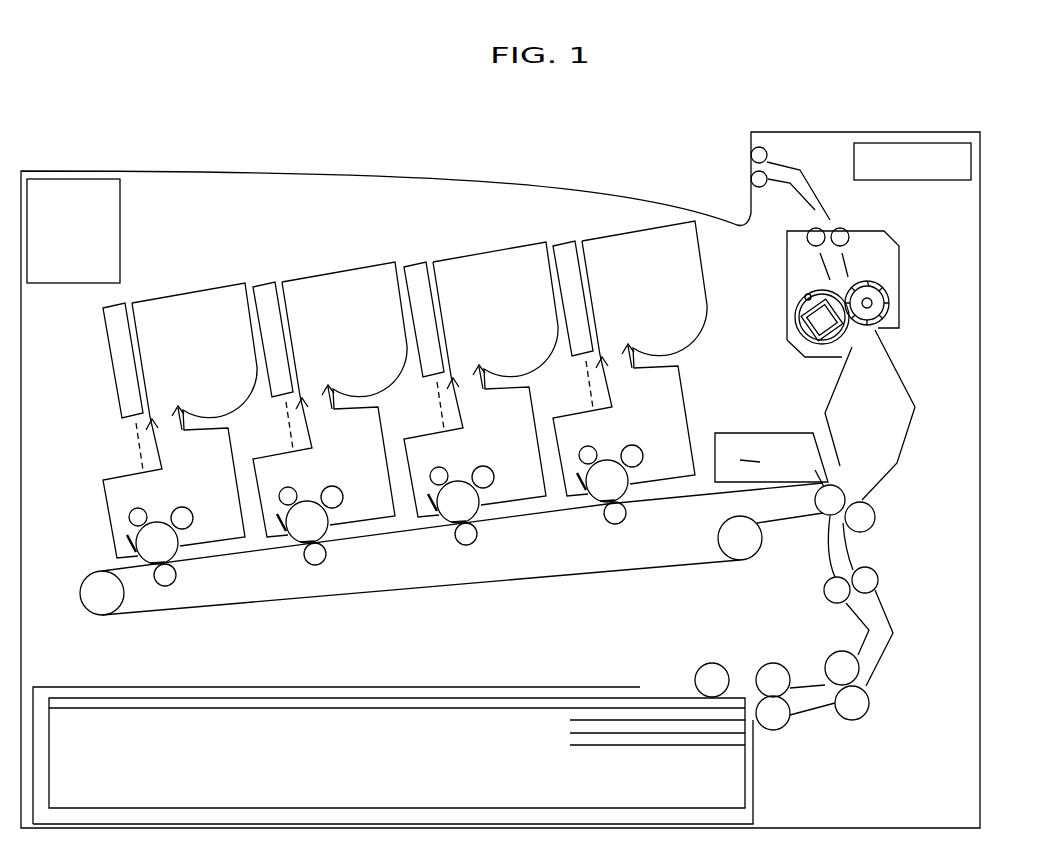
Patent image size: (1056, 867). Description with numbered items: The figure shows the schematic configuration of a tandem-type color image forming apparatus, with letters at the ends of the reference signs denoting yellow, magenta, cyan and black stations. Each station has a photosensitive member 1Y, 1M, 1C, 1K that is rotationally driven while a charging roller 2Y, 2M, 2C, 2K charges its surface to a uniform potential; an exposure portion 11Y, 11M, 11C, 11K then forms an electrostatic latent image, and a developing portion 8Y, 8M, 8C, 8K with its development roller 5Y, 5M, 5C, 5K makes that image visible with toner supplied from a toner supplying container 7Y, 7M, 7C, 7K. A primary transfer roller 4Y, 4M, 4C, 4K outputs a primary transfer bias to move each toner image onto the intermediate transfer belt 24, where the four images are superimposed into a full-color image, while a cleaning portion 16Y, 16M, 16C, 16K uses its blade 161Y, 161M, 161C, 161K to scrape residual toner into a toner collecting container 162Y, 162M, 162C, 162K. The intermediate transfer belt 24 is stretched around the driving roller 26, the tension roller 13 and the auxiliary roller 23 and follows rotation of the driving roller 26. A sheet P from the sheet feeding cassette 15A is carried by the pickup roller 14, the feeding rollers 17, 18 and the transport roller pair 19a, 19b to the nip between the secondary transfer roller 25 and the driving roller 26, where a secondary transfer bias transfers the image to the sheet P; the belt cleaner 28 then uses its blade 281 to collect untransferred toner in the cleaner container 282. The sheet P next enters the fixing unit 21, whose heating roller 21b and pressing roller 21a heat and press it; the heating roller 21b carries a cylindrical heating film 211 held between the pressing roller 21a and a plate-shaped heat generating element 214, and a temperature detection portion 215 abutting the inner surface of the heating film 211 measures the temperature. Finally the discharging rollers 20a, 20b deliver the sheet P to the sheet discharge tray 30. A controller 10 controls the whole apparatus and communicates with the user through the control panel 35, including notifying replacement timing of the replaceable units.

The photosensitive member 1K is at (165, 548).
The photosensitive member 1C is at (333, 539).
The photosensitive member 1M is at (485, 523).
The photosensitive member 1Y is at (632, 506).
The charging roller 2K is at (147, 510).
The charging roller 2C is at (313, 462).
The charging roller 2M is at (464, 442).
The charging roller 2Y is at (613, 421).
The primary transfer roller 4K is at (166, 586).
The primary transfer roller 4C is at (303, 594).
The primary transfer roller 4M is at (453, 574).
The primary transfer roller 4Y is at (603, 557).
The development roller 5K is at (178, 508).
The development roller 5C is at (339, 476).
The development roller 5M is at (491, 456).
The development roller 5Y is at (639, 435).
The toner supplying container 7K is at (186, 323).
The toner supplying container 7C is at (330, 366).
The toner supplying container 7M is at (481, 346).
The toner supplying container 7Y is at (630, 327).
The developing portion 8K is at (190, 423).
The developing portion 8C is at (340, 377).
The developing portion 8M is at (491, 357).
The developing portion 8Y is at (640, 336).
The exposure portion 11K is at (119, 318).
The exposure portion 11C is at (290, 296).
The exposure portion 11M is at (442, 276).
The exposure portion 11Y is at (573, 270).
The cleaning portion 16K is at (152, 430).
The cleaning portion 16C is at (326, 363).
The cleaning portion 16M is at (477, 343).
The cleaning portion 16Y is at (626, 322).
The blade 161K is at (155, 563).
The blade 161C is at (270, 593).
The blade 161M is at (432, 547).
The blade 161Y is at (583, 530).
The toner collecting container 162K is at (125, 500).
The toner collecting container 162C is at (266, 440).
The toner collecting container 162M is at (415, 420).
The toner collecting container 162Y is at (566, 399).
The controller 10 is at (72, 284).
The tension roller 13 is at (95, 614).
The pickup roller 14 is at (708, 675).
The sheet feeding cassette 15A is at (753, 815).
The feeding roller 17 is at (768, 675).
The feeding roller 18 is at (832, 658).
The transport roller 19a is at (835, 603).
The transport roller 19b is at (877, 597).
The discharging roller 20a is at (843, 232).
The discharging roller 20b is at (765, 155).
The fixing unit 21 is at (900, 310).
The pressing roller 21a is at (877, 287).
The heating roller 21b is at (797, 330).
The heating film 211 is at (799, 316).
The plate-shaped heat generating element 214 is at (812, 322).
The temperature detection portion 215 is at (806, 294).
The auxiliary roller 23 is at (750, 528).
The intermediate transfer belt 24 is at (390, 592).
The secondary transfer roller 25 is at (875, 520).
The driving roller 26 is at (822, 516).
The belt cleaner 28 is at (720, 432).
The blade 281 is at (806, 466).
The cleaner container 282 is at (756, 462).
The sheet discharge tray 30 is at (643, 190).
The control panel 35 is at (965, 178).
The sheet P is at (598, 697).